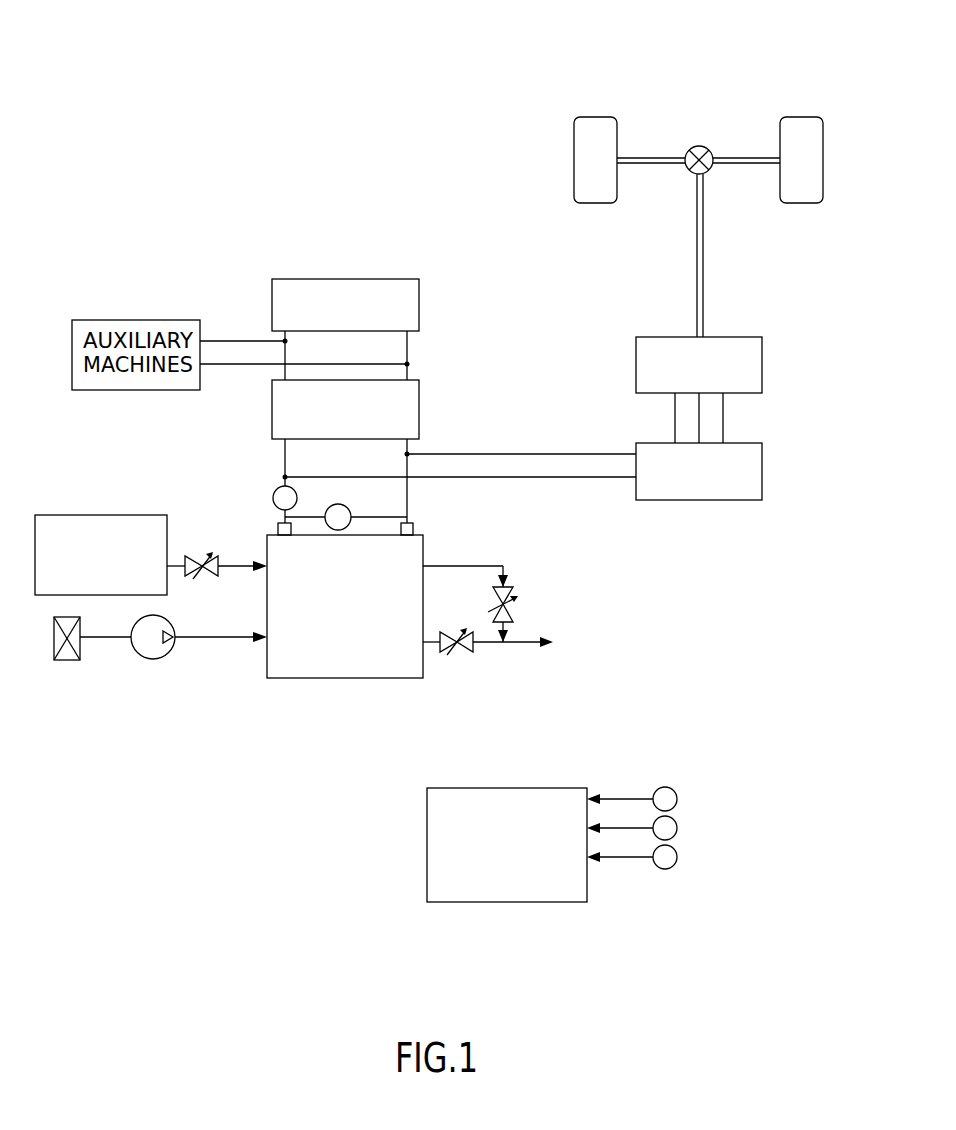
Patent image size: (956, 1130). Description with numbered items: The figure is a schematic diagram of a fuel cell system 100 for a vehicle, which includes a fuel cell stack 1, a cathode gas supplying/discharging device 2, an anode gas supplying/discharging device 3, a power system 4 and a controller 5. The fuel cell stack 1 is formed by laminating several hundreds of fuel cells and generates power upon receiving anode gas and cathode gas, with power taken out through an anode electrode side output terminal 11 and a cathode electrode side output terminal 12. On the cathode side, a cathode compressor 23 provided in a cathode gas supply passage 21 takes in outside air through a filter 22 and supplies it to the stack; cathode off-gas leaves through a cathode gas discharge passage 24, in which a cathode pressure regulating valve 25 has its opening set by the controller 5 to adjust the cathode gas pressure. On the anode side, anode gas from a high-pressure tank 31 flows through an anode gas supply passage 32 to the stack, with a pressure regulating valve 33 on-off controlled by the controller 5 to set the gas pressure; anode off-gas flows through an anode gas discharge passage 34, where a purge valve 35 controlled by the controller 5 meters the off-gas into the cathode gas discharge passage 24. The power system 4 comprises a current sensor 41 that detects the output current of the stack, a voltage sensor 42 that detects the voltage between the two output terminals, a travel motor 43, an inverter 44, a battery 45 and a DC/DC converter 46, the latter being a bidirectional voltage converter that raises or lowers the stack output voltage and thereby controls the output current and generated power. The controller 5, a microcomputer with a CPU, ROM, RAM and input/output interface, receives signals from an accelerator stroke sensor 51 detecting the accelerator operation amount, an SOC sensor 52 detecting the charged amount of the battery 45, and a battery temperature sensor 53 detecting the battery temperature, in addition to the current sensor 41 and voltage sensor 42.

The fuel cell system 100 is at (201, 76).
The fuel cell stack 1 is at (283, 678).
The cathode gas supplying/discharging device 2 is at (219, 655).
The anode gas supplying/discharging device 3 is at (188, 526).
The power system 4 is at (286, 268).
The controller 5 is at (483, 902).
The anode electrode side output terminal 11 is at (278, 528).
The cathode electrode side output terminal 12 is at (413, 528).
The cathode gas supply passage 21 is at (190, 637).
The filter 22 is at (67, 660).
The cathode compressor 23 is at (166, 617).
The cathode gas discharge passage 24 is at (522, 642).
The cathode pressure regulating valve 25 is at (463, 652).
The high-pressure tank 31 is at (92, 515).
The anode gas supply passage 32 is at (205, 556).
The pressure regulating valve 33 is at (212, 576).
The anode gas discharge passage 34 is at (450, 566).
The purge valve 35 is at (513, 601).
The current sensor 41 is at (277, 490).
The voltage sensor 42 is at (333, 504).
The travel motor 43 is at (762, 365).
The inverter 44 is at (762, 465).
The battery 45 is at (420, 304).
The DC/DC converter 46 is at (420, 400).
The accelerator stroke sensor 51 is at (677, 799).
The SOC sensor 52 is at (677, 828).
The battery temperature sensor 53 is at (677, 857).